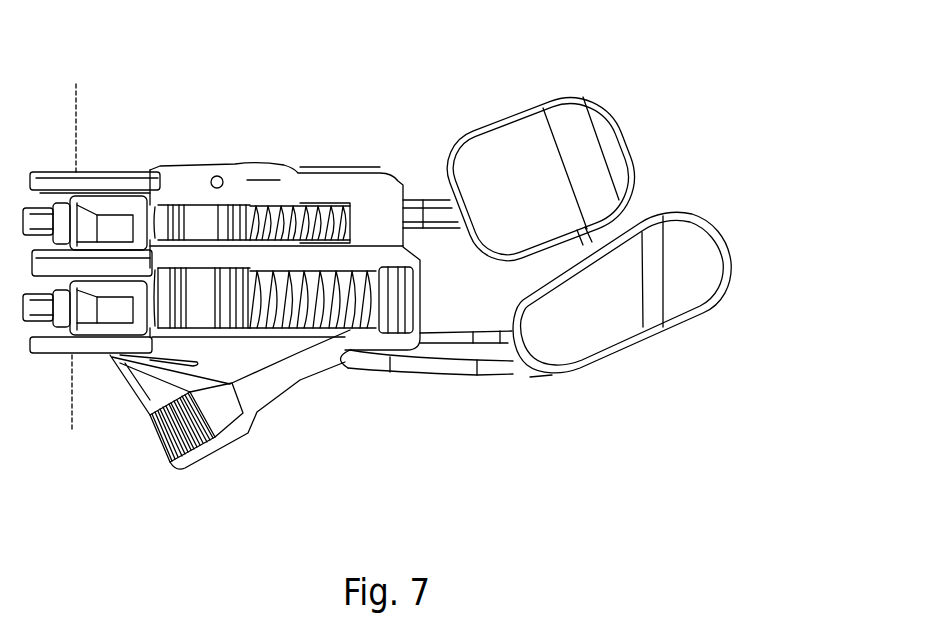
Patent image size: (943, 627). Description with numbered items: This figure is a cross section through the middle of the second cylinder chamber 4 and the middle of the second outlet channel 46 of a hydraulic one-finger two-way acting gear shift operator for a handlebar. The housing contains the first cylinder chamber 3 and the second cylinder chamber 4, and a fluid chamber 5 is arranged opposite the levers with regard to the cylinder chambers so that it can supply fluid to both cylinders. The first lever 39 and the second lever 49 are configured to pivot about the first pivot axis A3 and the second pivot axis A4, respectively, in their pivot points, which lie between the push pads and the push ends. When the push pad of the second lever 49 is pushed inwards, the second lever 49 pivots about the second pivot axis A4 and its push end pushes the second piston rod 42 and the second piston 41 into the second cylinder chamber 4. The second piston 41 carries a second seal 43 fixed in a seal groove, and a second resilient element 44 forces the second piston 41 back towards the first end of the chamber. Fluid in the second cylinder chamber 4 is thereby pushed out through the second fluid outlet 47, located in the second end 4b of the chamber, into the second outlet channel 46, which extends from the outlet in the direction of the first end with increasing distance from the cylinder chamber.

The first pivot axis A3 is at (77, 114).
The second pivot axis A4 is at (75, 409).
The second piston rod 42 is at (98, 283).
The fluid chamber 5 is at (155, 182).
The second piston 41 is at (200, 267).
The second seal 43 is at (235, 267).
The second resilient element 44 is at (298, 204).
The first cylinder chamber 3 is at (327, 204).
The second cylinder chamber 4 is at (347, 270).
The second end of the second cylinder chamber 4b is at (401, 277).
The first lever 39 is at (602, 140).
The second lever 49 is at (695, 253).
The second fluid outlet 47 is at (360, 330).
The second outlet channel 46 is at (253, 383).